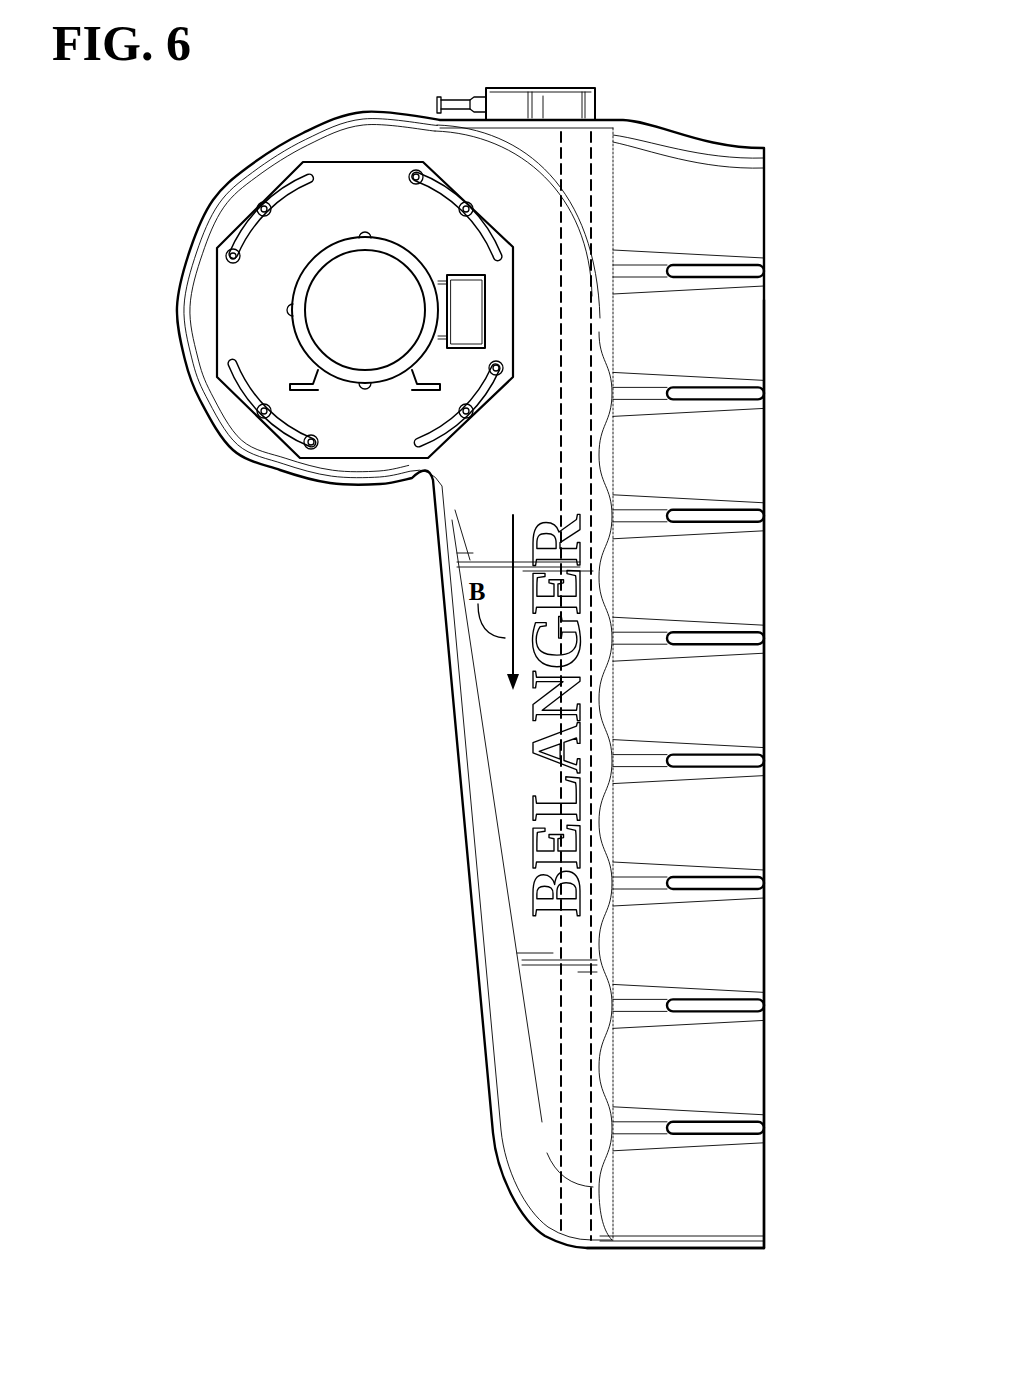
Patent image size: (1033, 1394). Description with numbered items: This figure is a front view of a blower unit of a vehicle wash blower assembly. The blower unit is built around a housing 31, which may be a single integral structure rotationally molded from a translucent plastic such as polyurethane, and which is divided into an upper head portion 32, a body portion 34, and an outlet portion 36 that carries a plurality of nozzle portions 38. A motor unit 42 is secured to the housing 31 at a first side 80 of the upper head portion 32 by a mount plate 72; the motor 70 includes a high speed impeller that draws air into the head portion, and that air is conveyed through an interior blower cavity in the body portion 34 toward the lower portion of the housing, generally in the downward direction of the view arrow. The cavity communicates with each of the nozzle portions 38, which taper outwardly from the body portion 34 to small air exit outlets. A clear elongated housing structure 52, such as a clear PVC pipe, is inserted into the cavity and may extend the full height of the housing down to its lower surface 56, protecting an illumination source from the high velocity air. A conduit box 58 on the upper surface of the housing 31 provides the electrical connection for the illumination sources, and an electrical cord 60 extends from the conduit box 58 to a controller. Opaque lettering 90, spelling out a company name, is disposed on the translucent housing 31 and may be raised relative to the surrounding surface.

The housing 31 is at (605, 125).
The upper head portion 32 is at (328, 162).
The body portion 34 is at (450, 751).
The outlet portion 36 is at (753, 687).
The nozzle portions 38 is at (746, 318).
The motor unit 42 is at (385, 180).
The elongated housing structure 52 is at (592, 165).
The lower surface 56 is at (653, 1250).
The conduit box 58 is at (552, 90).
The electrical cord 60 is at (455, 98).
The motor 70 is at (352, 357).
The mount plate 72 is at (242, 343).
The first side 80 is at (367, 145).
The opaque lettering 90 is at (530, 712).